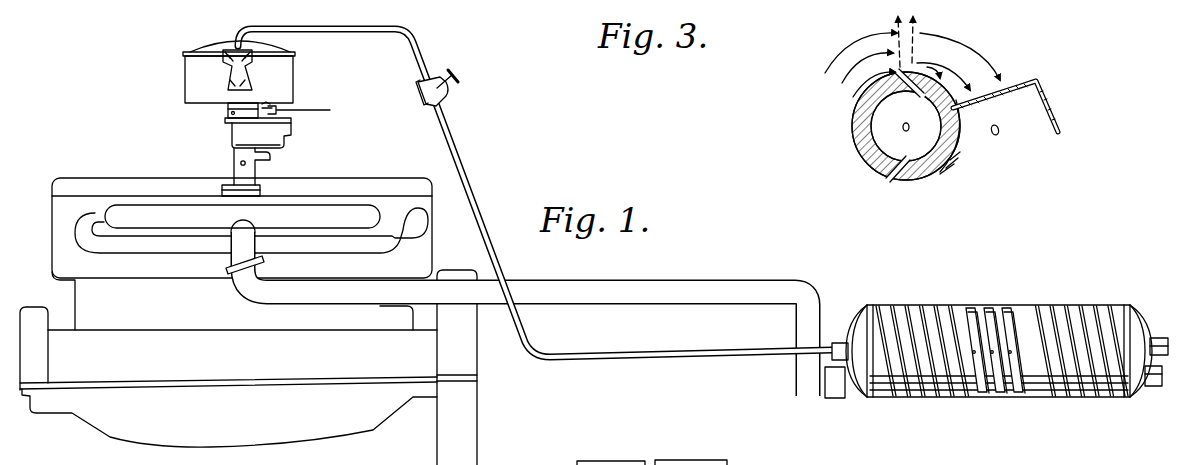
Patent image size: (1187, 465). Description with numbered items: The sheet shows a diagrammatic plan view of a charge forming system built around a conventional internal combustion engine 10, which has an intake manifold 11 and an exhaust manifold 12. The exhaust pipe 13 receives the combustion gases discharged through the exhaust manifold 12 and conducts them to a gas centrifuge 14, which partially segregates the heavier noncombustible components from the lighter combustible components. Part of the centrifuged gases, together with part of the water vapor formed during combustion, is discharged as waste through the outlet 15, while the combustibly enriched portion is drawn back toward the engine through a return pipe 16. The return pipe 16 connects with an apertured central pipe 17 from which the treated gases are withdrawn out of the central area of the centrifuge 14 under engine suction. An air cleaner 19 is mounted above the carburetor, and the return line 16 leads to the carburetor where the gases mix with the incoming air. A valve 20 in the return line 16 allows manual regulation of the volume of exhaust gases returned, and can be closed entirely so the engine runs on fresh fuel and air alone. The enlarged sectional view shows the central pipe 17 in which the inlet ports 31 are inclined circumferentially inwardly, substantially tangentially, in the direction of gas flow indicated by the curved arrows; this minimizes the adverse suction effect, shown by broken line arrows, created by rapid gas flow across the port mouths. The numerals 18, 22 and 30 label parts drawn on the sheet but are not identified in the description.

In FIG. 1, the internal combustion engine 10 is at (64, 265).
In FIG. 1, the intake manifold 11 is at (130, 208).
In FIG. 1, the exhaust manifold 12 is at (163, 245).
In FIG. 1, the exhaust pipe 13 is at (650, 270).
In FIG. 1, the gas centrifuge 14 is at (915, 285).
In FIG. 1, the outlet 15 is at (1148, 387).
In FIG. 1, the return pipe 16 is at (652, 355).
In FIG. 1, the apertured central pipe 17 is at (988, 310).
In FIG. 3, the apertured central pipe 17 is at (858, 150).
In FIG. 1, the air cleaner 18 is at (200, 88).
In FIG. 1, the air cleaner 19 is at (236, 136).
In FIG. 1, the valve 20 is at (445, 101).
In FIG. 3, the bracket 22 is at (1040, 124).
In FIG. 1, the outlet fitting 30 is at (1157, 336).
In FIG. 3, the ports 31 is at (862, 92).